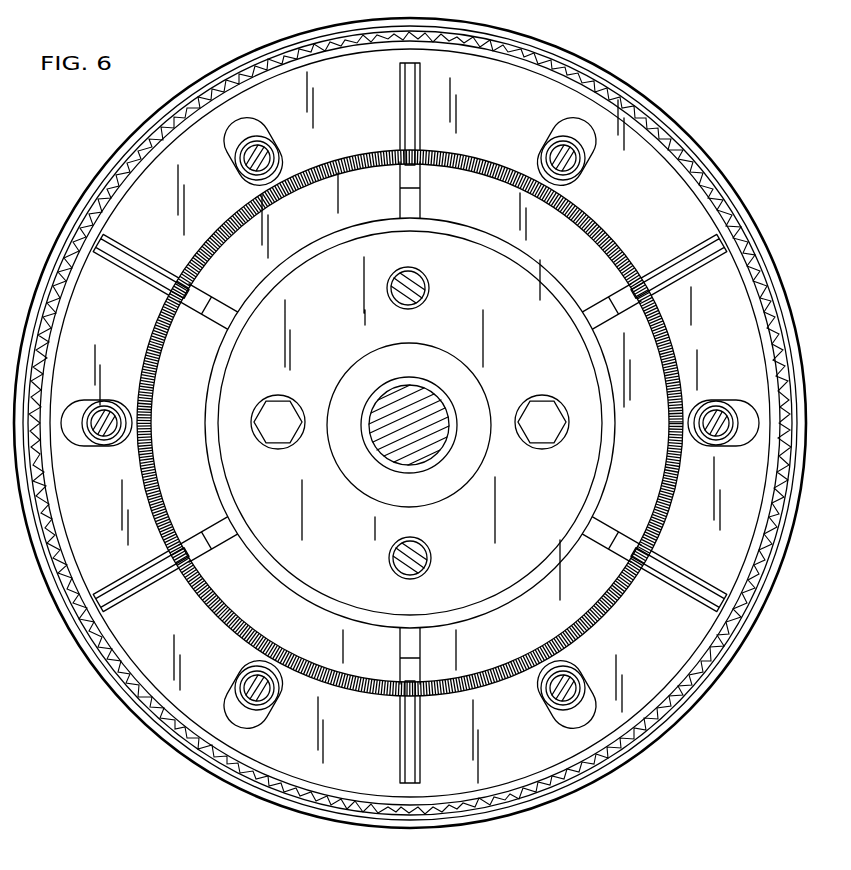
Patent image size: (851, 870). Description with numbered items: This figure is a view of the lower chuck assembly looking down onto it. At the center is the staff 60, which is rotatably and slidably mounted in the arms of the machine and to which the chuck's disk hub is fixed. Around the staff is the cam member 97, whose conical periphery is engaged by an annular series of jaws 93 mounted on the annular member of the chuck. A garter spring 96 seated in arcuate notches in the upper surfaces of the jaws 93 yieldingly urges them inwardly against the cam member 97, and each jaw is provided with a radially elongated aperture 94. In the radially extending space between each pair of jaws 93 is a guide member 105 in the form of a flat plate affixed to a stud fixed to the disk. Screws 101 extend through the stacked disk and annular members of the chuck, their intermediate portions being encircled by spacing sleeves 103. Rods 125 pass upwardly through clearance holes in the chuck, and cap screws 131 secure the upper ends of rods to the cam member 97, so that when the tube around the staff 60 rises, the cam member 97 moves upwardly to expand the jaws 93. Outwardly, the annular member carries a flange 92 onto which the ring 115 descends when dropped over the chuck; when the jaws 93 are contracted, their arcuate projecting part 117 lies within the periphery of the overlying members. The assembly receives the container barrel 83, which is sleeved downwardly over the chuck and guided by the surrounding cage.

The staff 60 is at (440, 426).
The container barrel 83 is at (150, 718).
The flange 92 is at (158, 110).
The jaws 93 is at (216, 225).
The radially elongated aperture 94 is at (236, 134).
The garter spring 96 is at (203, 270).
The cam member 97 is at (537, 504).
The screws 101 is at (259, 149).
The spacing sleeve 103 is at (269, 151).
The guide member 105 is at (132, 268).
The ring 115 is at (203, 757).
The arcuate projecting part 117 is at (198, 105).
The rods 125 is at (425, 290).
The cap screws 131 is at (294, 411).